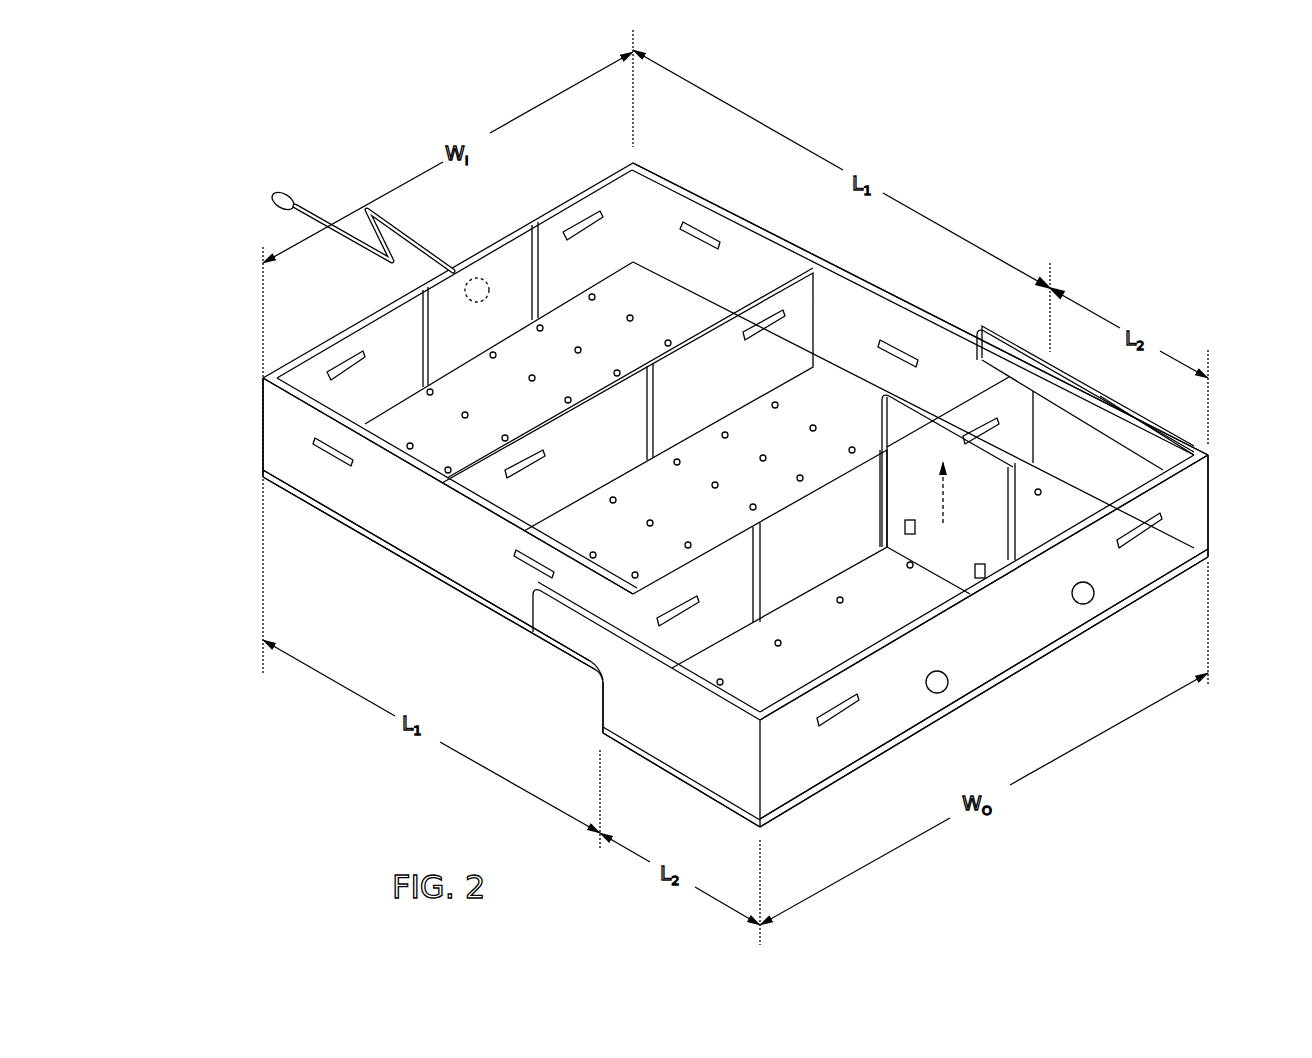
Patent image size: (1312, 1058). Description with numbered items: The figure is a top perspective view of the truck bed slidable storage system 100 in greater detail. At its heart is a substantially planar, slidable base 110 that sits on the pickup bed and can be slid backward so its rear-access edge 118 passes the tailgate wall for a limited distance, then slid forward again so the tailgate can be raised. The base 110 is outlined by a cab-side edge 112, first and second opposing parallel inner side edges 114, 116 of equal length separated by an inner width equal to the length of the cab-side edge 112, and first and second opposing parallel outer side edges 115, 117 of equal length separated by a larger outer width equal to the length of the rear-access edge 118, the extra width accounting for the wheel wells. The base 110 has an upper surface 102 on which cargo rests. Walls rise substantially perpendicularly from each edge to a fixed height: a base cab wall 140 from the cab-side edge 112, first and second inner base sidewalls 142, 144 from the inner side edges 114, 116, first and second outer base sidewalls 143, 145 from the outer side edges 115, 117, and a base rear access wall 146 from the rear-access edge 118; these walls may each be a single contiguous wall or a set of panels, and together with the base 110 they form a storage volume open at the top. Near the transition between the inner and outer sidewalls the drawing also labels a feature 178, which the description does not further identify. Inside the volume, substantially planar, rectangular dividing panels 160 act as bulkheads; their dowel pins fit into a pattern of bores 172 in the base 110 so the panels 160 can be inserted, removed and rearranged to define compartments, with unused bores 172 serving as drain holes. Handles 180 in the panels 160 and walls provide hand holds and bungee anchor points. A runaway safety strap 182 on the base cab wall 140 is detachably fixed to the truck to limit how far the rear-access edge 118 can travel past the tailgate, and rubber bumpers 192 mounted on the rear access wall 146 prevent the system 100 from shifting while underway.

The slidable storage system 100 is at (320, 105).
The upper surface 102 is at (948, 494).
The slidable base 110 is at (432, 592).
The cab-side edge 112 is at (262, 472).
The first inner side edge 114 is at (502, 606).
The first outer side edge 115 is at (645, 750).
The second inner side edge 116 is at (1220, 565).
The second outer side edge 117 is at (1070, 382).
The rear-access edge 118 is at (1120, 614).
The base cab wall 140 is at (512, 265).
The first inner base sidewall 142 is at (400, 517).
The first outer base sidewall 143 is at (718, 762).
The second inner base sidewall 144 is at (745, 270).
The second outer base sidewall 145 is at (1105, 445).
The base rear access wall 146 is at (780, 768).
The dividing panel 160 is at (736, 468).
The bores 172 is at (433, 392).
The notch 178 is at (595, 688).
The handle 180 is at (578, 213).
The runaway safety strap 182 is at (420, 250).
The rubber bumpers 192 is at (1075, 603).